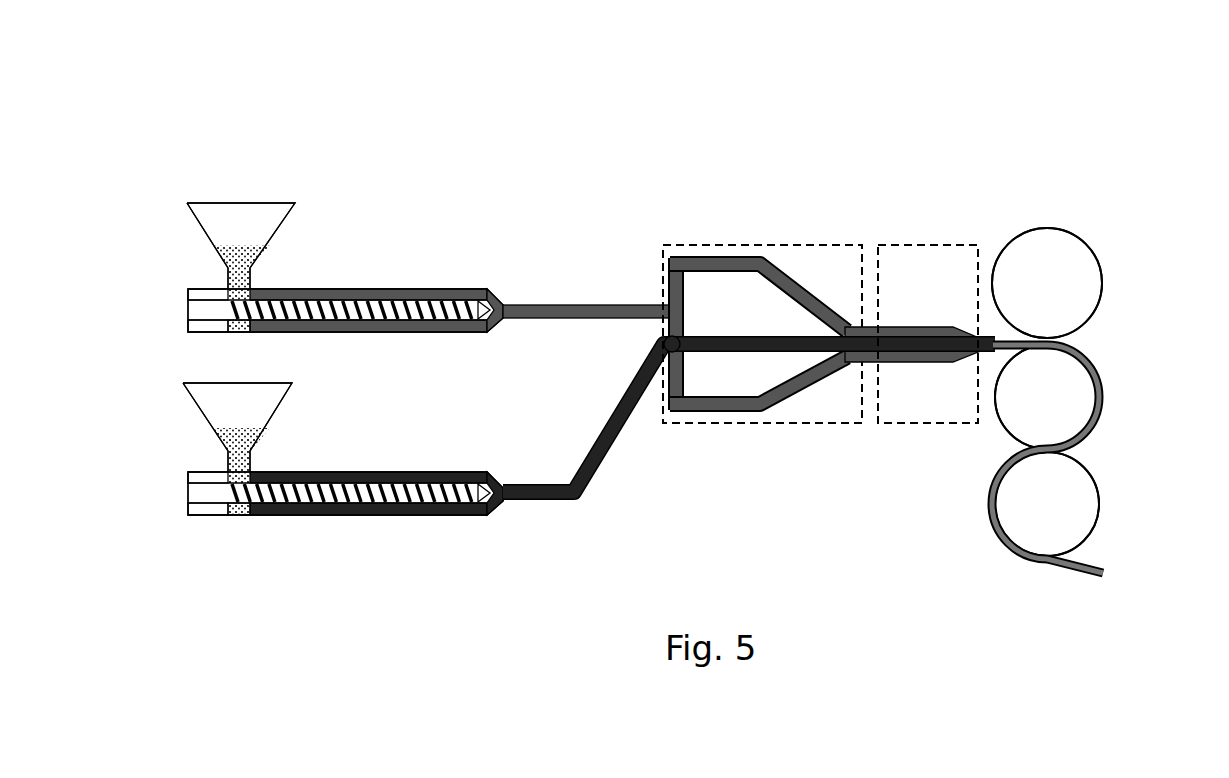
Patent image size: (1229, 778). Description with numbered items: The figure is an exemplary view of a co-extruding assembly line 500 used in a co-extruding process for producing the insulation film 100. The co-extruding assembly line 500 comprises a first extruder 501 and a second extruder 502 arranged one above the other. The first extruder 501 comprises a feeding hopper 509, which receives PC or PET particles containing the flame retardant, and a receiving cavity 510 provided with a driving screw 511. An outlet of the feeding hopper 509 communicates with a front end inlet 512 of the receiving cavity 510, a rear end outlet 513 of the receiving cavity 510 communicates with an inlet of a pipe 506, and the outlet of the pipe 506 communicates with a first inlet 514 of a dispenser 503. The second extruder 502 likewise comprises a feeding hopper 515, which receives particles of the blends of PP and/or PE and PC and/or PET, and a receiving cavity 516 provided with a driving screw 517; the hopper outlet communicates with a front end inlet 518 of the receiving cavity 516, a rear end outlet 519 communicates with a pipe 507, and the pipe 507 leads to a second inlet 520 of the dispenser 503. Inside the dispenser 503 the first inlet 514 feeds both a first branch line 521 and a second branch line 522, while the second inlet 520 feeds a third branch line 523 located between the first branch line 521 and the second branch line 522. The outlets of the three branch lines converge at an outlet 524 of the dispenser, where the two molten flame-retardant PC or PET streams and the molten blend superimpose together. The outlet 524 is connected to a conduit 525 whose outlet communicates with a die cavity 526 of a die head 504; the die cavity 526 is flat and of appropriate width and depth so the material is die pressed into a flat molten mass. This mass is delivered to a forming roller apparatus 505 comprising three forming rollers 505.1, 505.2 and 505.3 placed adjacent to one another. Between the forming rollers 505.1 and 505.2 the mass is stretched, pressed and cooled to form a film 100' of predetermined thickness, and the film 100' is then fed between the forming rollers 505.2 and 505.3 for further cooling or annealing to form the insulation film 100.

The co-extruding assembly line 500 is at (920, 110).
The first extruder 501 is at (300, 278).
The second extruder 502 is at (312, 462).
The dispenser 503 is at (715, 228).
The die head 504 is at (912, 233).
The forming roller apparatus 505 is at (1078, 225).
The forming roller 505.1 is at (1090, 293).
The forming roller 505.2 is at (1080, 407).
The forming roller 505.3 is at (1082, 508).
The pipe 506 is at (562, 305).
The pipe 507 is at (612, 433).
The feeding hopper 509 is at (225, 195).
The receiving cavity 510 is at (372, 298).
The driving screw 511 is at (432, 326).
The front end inlet 512 is at (223, 295).
The rear end outlet 513 is at (497, 325).
The first inlet 514 is at (667, 295).
The feeding hopper 515 is at (207, 398).
The receiving cavity 516 is at (370, 478).
The driving screw 517 is at (450, 480).
The front end inlet 518 is at (217, 478).
The rear end outlet 519 is at (492, 508).
The second inlet 520 is at (688, 338).
The first branch line 521 is at (752, 255).
The second branch line 522 is at (735, 413).
The third branch line 523 is at (758, 352).
The outlet of the dispenser 524 is at (860, 338).
The conduit 525 is at (860, 338).
The die cavity 526 is at (927, 362).
The film 100' is at (1089, 397).
The insulation film 100 is at (1047, 538).